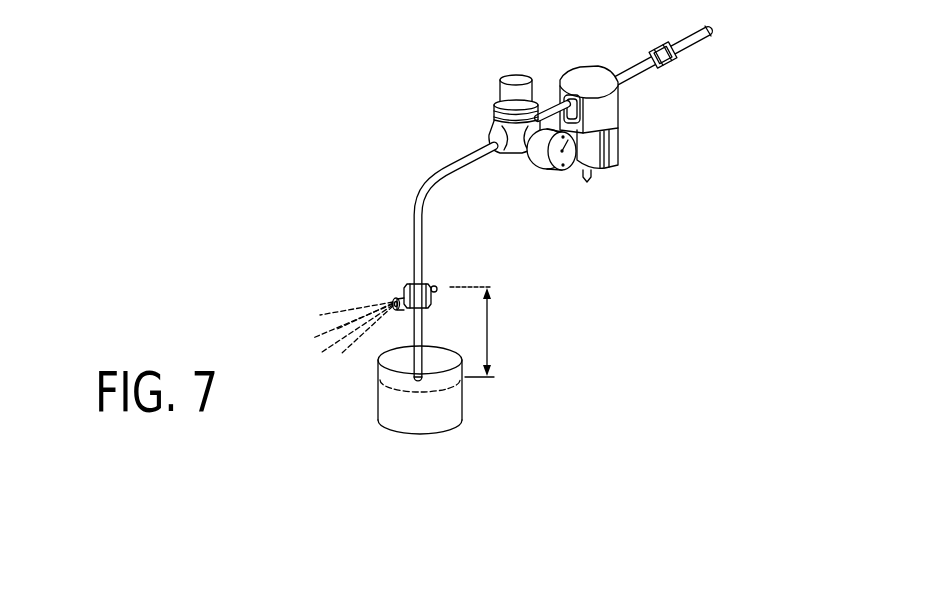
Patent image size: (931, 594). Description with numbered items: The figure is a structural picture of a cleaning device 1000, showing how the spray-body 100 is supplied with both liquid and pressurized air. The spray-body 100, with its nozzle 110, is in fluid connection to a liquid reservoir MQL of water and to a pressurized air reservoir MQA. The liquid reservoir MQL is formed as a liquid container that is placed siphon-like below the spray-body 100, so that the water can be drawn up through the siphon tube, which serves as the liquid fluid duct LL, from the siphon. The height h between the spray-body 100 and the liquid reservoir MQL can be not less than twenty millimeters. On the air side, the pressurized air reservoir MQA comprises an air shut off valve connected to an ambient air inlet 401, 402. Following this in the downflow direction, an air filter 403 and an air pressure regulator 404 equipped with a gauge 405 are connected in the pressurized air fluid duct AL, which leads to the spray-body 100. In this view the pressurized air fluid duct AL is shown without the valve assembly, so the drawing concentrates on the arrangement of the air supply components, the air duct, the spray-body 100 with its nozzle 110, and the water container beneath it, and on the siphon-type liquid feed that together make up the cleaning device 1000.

The cleaning device 1000 is at (357, 97).
The pressurized air reservoir MQA is at (656, 150).
The ambient air inlet 401 is at (708, 39).
The ambient air inlet 402 is at (674, 66).
The air filter 403 is at (593, 70).
The air pressure regulator 404 is at (500, 99).
The gauge 405 is at (540, 162).
The pressurized air fluid duct AL is at (427, 183).
The nozzle 110 is at (397, 294).
The spray-body 100 is at (335, 325).
The liquid fluid duct LL is at (428, 318).
The height h is at (486, 332).
The liquid reservoir MQL is at (481, 409).